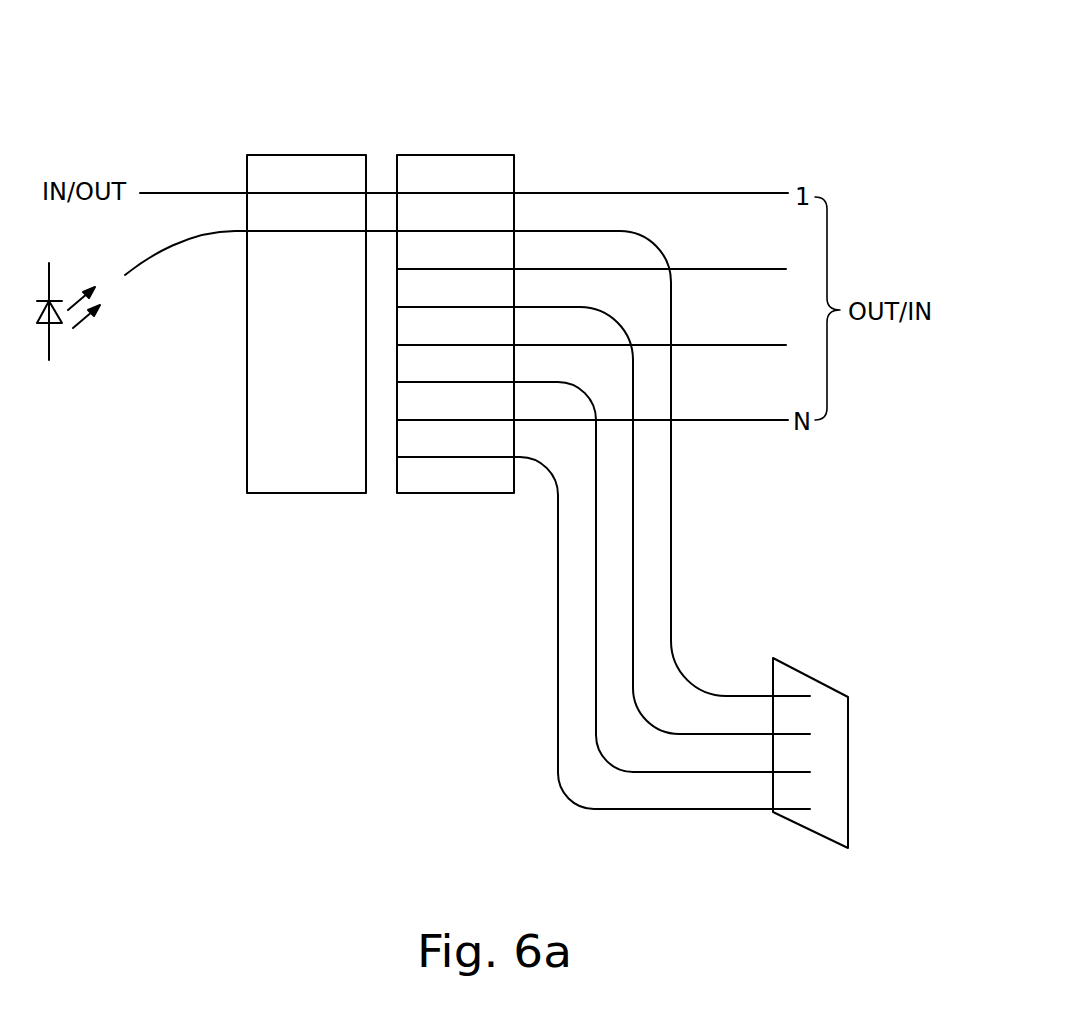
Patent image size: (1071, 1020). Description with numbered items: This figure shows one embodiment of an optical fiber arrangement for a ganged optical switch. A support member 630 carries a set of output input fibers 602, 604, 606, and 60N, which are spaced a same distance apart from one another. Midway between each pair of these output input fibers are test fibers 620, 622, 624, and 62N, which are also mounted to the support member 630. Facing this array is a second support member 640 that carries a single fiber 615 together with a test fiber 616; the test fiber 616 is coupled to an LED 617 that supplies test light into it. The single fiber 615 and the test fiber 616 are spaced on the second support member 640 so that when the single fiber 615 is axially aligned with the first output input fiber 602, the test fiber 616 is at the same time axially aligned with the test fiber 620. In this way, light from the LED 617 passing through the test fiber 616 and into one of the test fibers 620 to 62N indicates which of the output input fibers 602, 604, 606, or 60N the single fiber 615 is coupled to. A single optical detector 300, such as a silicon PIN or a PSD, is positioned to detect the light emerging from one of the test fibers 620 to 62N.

The single fiber 615 is at (183, 182).
The second support member 640 is at (307, 140).
The support member 630 is at (457, 140).
The test fiber 616 is at (178, 250).
The LED 617 is at (58, 353).
The output input fiber 602 is at (683, 185).
The output input fiber 604 is at (683, 261).
The output input fiber 606 is at (683, 337).
The output input fiber 60N is at (683, 412).
The test fiber 620 is at (667, 528).
The test fiber 622 is at (630, 580).
The test fiber 624 is at (590, 625).
The test fiber 62N is at (552, 700).
The optical detector 300 is at (803, 840).